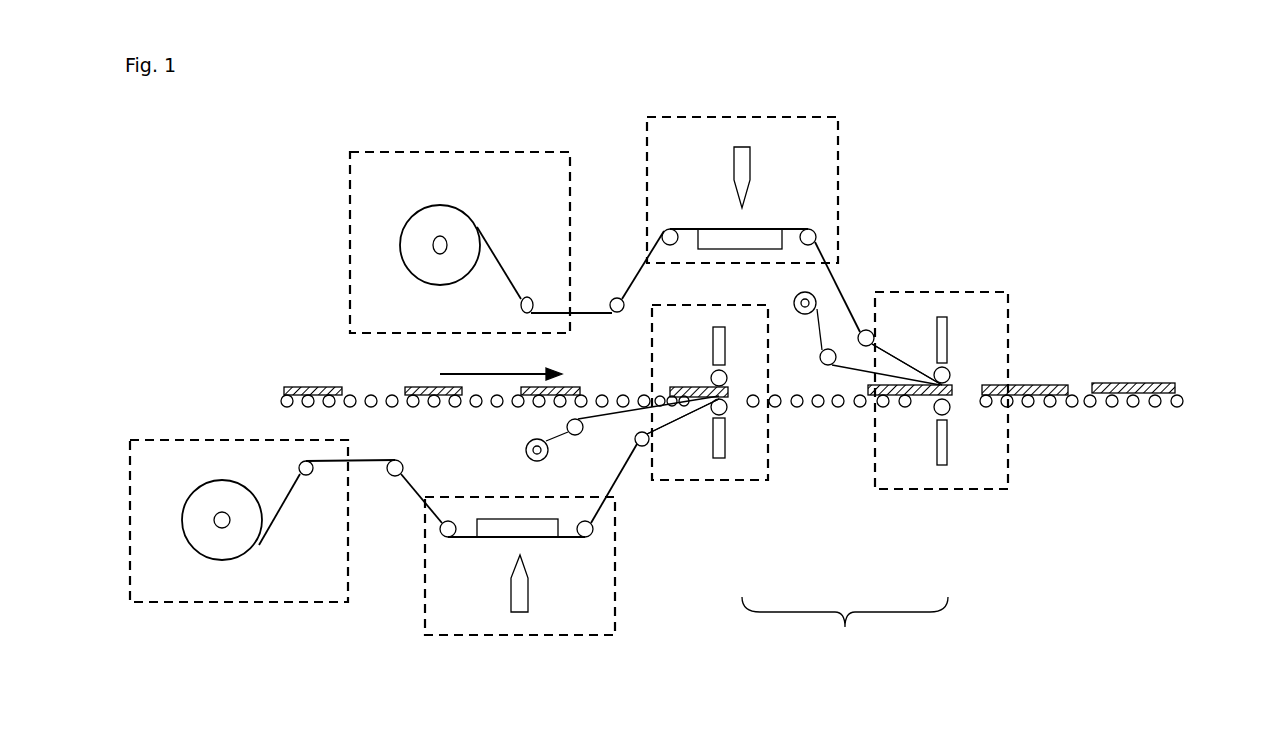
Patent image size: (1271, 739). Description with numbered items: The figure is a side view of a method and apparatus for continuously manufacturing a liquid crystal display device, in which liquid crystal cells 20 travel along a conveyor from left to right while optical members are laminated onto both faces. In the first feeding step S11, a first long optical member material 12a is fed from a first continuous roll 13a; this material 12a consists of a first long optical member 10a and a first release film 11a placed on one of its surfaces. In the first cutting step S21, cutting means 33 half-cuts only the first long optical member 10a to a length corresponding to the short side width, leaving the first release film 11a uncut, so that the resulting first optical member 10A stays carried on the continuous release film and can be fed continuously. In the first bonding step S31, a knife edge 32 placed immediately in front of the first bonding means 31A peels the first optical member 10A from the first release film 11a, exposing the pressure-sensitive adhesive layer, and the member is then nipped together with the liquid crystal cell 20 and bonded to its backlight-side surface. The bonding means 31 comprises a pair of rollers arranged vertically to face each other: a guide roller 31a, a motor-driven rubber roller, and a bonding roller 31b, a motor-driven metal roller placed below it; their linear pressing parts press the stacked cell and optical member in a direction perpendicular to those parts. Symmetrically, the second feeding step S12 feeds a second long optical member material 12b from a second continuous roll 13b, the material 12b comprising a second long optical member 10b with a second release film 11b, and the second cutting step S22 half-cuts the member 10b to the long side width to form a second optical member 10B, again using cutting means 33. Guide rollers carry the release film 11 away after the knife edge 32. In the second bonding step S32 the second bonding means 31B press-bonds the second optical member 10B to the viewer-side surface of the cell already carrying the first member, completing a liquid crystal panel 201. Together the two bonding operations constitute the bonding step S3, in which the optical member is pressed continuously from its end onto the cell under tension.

The liquid crystal cell 20 is at (312, 387).
The liquid crystal panel 201 is at (1133, 383).
The first long optical member 10a is at (272, 515).
The second long optical member 10b is at (488, 256).
The first release film 11a is at (280, 490).
The second release film 11b is at (502, 282).
The release film 11 is at (815, 343).
The first long optical member material 12a is at (429, 490).
The second long optical member material 12b is at (652, 251).
The first continuous roll 13a is at (195, 490).
The second continuous roll 13b is at (418, 208).
The cutting means 33 is at (750, 170).
The knife edge 32 is at (662, 412).
The bonding means 31 is at (845, 364).
The first bonding means 31A is at (845, 396).
The second bonding means 31B is at (958, 320).
The guide roller 31a is at (698, 366).
The bonding roller 31b is at (744, 434).
The first optical member 10A is at (704, 413).
The second optical member 10B is at (930, 382).
The first feeding step S11 is at (232, 602).
The second feeding step S12 is at (442, 152).
The first cutting step S21 is at (500, 636).
The second cutting step S22 is at (722, 117).
The first bonding step S31 is at (745, 482).
The second bonding step S32 is at (940, 490).
The bonding step S3 is at (845, 628).